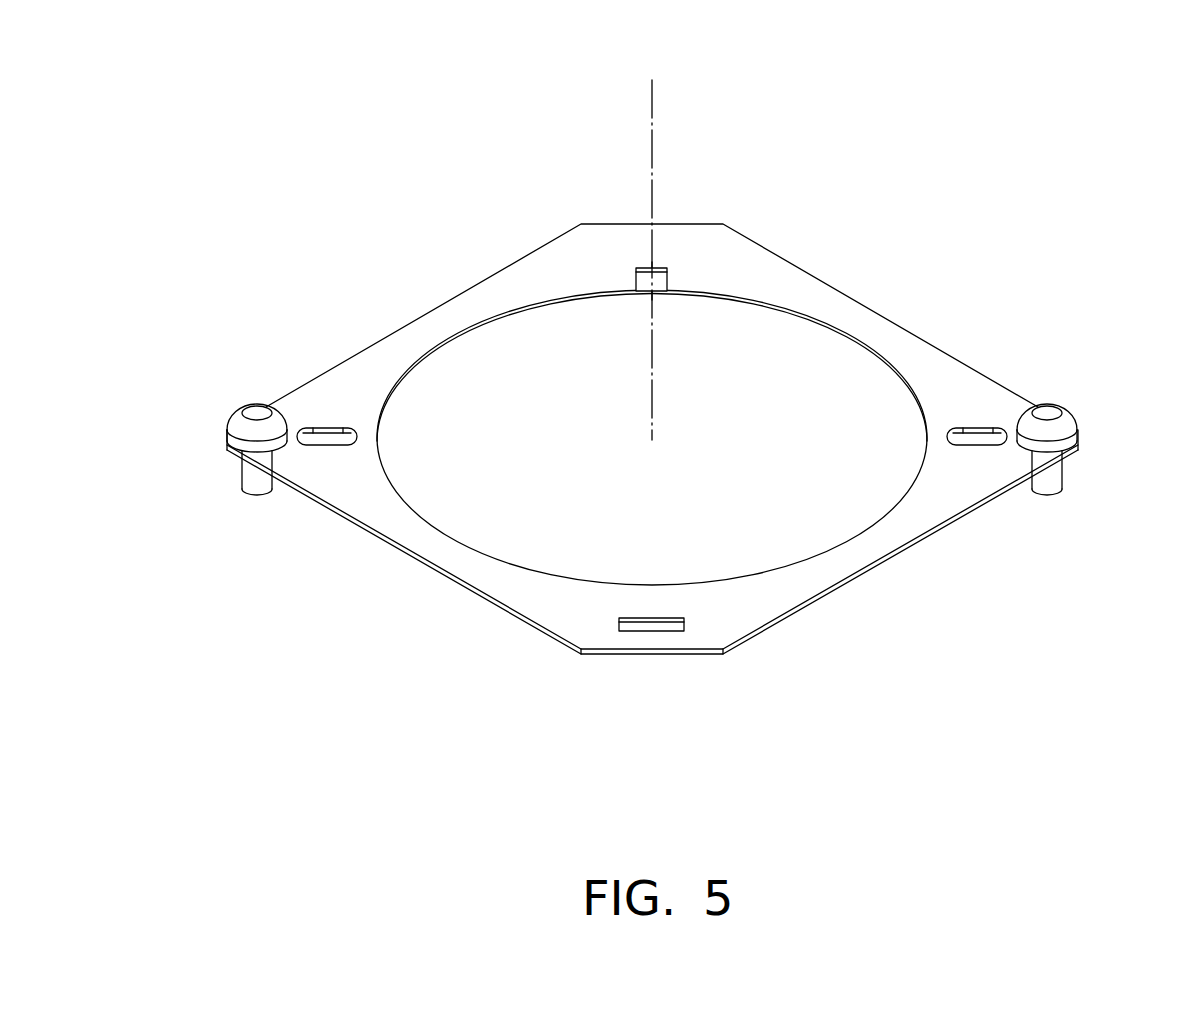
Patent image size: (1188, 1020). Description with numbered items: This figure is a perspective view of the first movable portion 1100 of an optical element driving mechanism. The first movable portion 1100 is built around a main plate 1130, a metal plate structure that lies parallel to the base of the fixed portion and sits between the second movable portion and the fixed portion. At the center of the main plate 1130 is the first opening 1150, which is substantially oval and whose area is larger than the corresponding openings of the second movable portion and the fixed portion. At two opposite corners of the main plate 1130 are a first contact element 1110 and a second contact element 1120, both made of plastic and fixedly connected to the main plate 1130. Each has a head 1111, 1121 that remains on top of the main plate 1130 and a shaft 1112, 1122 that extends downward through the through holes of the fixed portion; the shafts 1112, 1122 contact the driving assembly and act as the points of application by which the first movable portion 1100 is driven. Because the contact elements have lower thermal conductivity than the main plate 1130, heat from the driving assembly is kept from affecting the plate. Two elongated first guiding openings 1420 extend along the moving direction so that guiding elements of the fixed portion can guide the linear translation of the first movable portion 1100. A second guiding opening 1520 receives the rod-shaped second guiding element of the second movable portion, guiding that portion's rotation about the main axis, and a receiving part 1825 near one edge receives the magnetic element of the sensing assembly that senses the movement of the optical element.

The first movable portion 1100 is at (215, 57).
The first contact element 1110 is at (1062, 397).
The head 1111 is at (1065, 423).
The shaft 1112 is at (1055, 478).
The second contact element 1120 is at (242, 397).
The head 1121 is at (240, 422).
The shaft 1122 is at (250, 478).
The main plate 1130 is at (370, 505).
The first opening 1150 is at (470, 552).
The first guiding opening 1420 is at (320, 432).
The second guiding opening 1520 is at (663, 268).
The receiving part 1825 is at (675, 627).